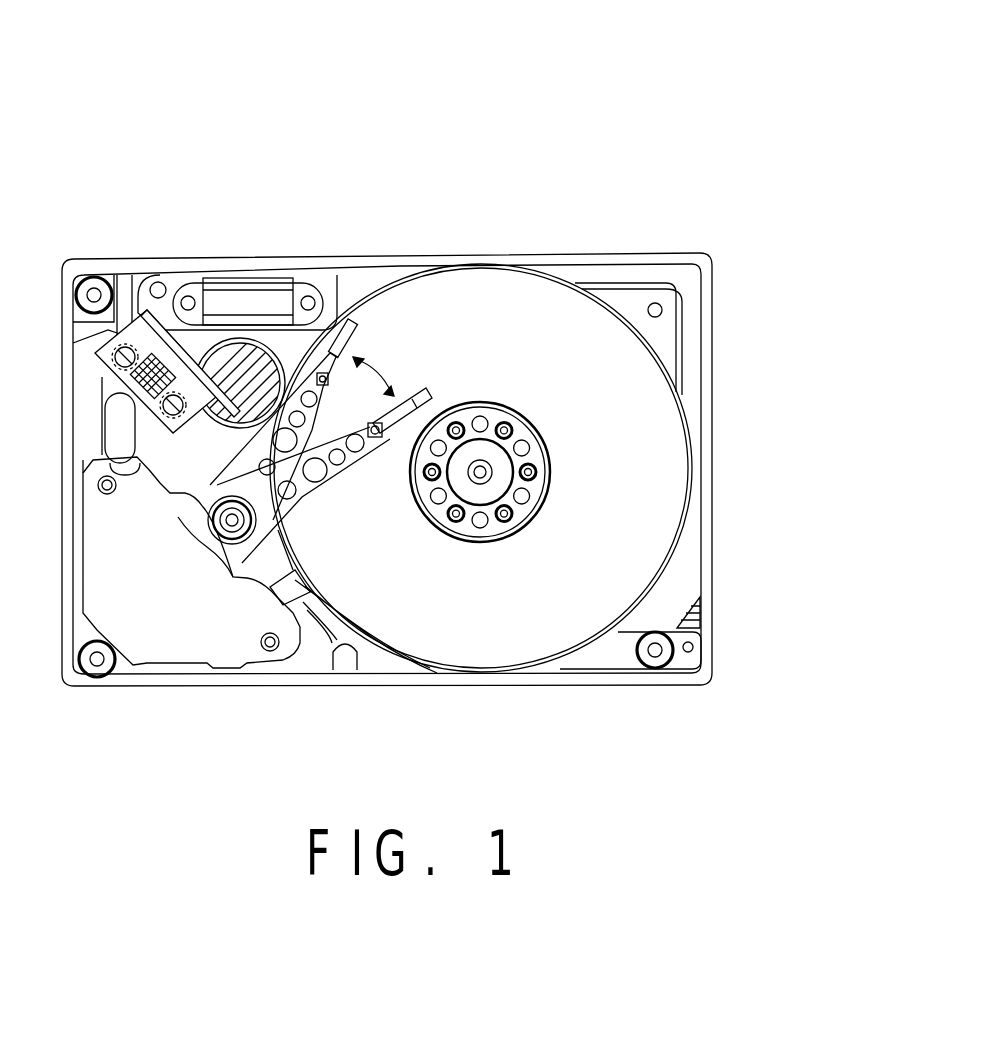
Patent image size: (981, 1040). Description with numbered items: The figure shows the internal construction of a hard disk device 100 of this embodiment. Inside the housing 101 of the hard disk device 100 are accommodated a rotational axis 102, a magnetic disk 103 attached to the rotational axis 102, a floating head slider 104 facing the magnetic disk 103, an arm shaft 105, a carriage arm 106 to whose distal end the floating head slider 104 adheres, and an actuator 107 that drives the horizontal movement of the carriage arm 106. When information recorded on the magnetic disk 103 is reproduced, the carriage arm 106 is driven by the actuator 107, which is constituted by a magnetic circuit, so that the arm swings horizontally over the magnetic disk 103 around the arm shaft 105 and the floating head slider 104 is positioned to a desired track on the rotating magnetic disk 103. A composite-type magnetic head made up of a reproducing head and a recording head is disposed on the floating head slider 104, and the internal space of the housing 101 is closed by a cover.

The hard disk device 100 is at (612, 114).
The housing 101 is at (583, 256).
The rotational axis 102 is at (500, 480).
The magnetic disk 103 is at (662, 428).
The floating head slider 104 is at (420, 388).
The arm shaft 105 is at (232, 544).
The carriage arm 106 is at (300, 498).
The actuator 107 is at (155, 647).